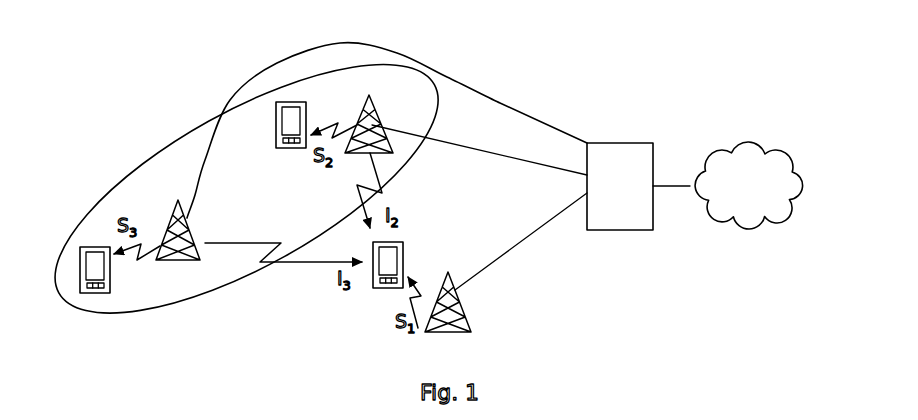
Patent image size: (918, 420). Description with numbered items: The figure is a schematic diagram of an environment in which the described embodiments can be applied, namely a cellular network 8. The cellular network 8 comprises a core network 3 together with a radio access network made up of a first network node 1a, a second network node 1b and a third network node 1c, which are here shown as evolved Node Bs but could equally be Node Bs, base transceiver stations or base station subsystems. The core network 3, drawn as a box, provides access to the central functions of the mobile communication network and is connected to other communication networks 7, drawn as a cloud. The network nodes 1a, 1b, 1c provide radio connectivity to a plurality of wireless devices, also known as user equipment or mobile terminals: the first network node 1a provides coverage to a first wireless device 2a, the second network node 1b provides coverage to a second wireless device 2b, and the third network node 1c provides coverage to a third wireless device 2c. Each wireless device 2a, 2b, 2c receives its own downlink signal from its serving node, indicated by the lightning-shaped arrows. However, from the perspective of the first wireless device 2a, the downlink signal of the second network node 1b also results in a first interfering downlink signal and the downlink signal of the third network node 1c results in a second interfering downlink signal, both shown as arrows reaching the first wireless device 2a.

The first network node 1a is at (468, 316).
The second network node 1b is at (404, 100).
The third network node 1c is at (170, 222).
The first wireless device 2a is at (403, 251).
The second wireless device 2b is at (307, 107).
The third wireless device 2c is at (110, 288).
The core network 3 is at (620, 186).
The other communication networks 7 is at (748, 185).
The cellular network 8 is at (671, 76).